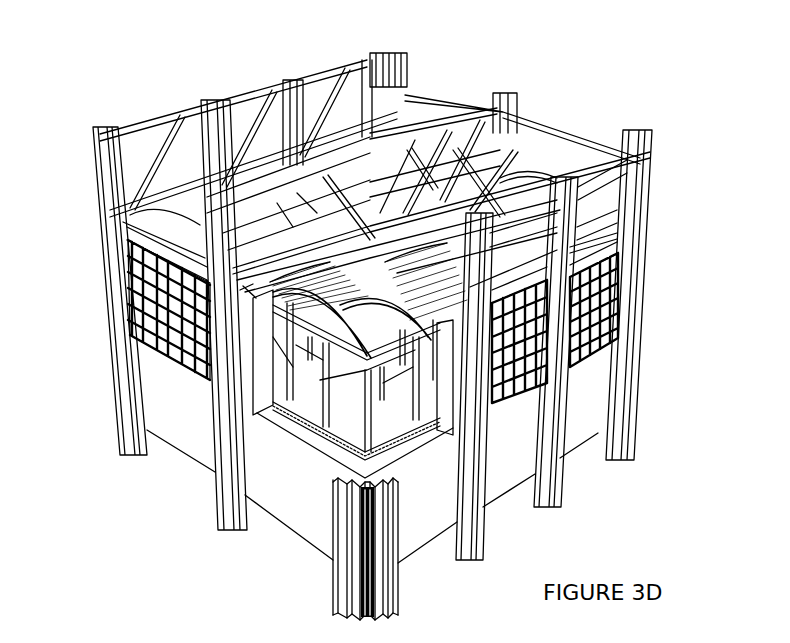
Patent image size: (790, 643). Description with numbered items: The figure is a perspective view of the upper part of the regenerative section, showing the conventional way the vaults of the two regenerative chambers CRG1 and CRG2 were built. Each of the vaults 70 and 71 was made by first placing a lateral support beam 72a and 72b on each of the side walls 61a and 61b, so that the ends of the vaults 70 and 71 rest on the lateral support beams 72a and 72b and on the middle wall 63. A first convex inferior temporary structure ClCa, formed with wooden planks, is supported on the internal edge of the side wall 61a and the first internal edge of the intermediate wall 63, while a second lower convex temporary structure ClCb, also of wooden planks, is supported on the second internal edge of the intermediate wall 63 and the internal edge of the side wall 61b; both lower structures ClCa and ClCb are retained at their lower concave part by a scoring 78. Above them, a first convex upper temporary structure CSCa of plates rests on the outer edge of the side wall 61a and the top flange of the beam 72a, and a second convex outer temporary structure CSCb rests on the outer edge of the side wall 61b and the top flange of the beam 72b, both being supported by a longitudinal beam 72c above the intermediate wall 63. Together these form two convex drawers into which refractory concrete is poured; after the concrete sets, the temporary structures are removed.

The vault 70 is at (182, 197).
The first convex upper temporary structure CSCa is at (262, 165).
The longitudinal beam 72c is at (467, 123).
The vault 71 is at (528, 172).
The lateral support beam 72b is at (612, 234).
The second convex outer temporary structure CSCb is at (595, 258).
The lateral support beam 72a is at (160, 229).
The side wall 61a is at (40, 291).
The middle wall 63 is at (157, 338).
The first convex inferior temporary structure ClCa is at (240, 290).
The second lower convex temporary structure ClCb is at (422, 435).
The scoring 78 is at (292, 391).
The side wall 61b is at (447, 406).
The regenerative chamber CRG1 is at (240, 495).
The regenerative chamber CRG2 is at (422, 526).